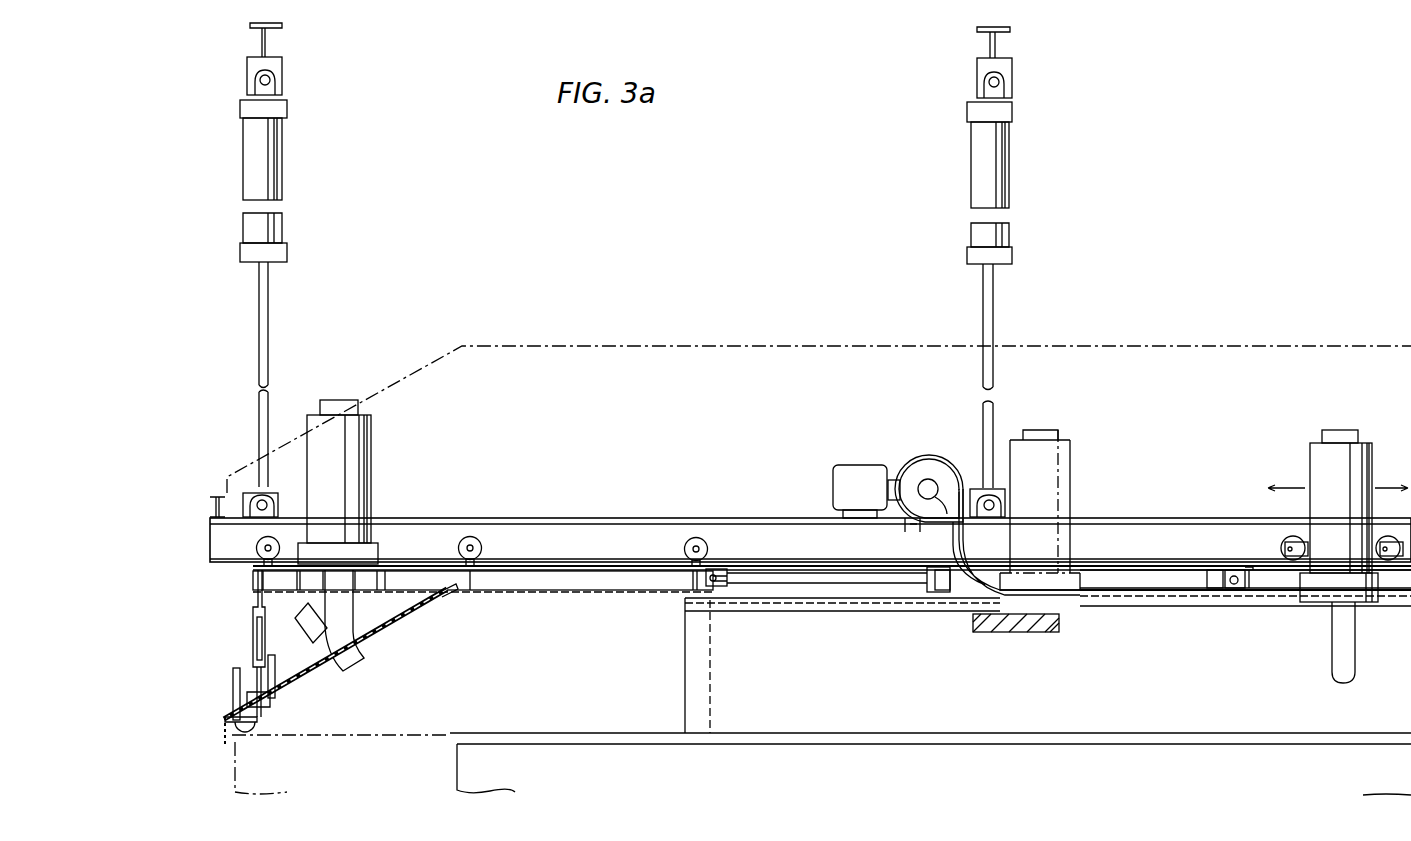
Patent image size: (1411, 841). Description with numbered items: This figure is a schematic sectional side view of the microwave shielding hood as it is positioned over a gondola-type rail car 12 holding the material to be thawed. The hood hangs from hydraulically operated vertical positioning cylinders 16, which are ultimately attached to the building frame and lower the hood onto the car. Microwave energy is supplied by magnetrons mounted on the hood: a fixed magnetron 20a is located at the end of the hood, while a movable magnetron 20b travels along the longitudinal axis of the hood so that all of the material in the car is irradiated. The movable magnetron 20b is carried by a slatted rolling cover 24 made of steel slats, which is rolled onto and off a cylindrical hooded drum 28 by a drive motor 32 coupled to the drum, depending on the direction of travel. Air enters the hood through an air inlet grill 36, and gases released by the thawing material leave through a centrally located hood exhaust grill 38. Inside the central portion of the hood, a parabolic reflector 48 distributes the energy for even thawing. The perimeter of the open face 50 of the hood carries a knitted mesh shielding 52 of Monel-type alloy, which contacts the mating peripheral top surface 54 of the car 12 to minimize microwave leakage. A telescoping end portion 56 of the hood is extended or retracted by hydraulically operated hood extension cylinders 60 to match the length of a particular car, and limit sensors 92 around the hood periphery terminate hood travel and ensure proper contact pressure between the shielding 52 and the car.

The rail car 12 is at (457, 750).
The vertical positioning cylinders 16 is at (282, 148).
The fixed magnetron 20a is at (372, 440).
The movable magnetron 20b is at (1310, 445).
The slatted rolling cover 24 is at (1160, 598).
The hooded drum 28 is at (928, 456).
The drive motor 32 is at (850, 465).
The air inlet grill 36 is at (415, 598).
The hood exhaust grill 38 is at (1059, 632).
The parabolic reflector 48 is at (727, 611).
The open face 50 is at (257, 718).
The knitted mesh shielding 52 is at (243, 732).
The peripheral top surface 54 is at (630, 733).
The telescoping end portion 56 is at (573, 595).
The hood extension cylinders 60 is at (1132, 578).
The limit sensors 92 is at (233, 670).